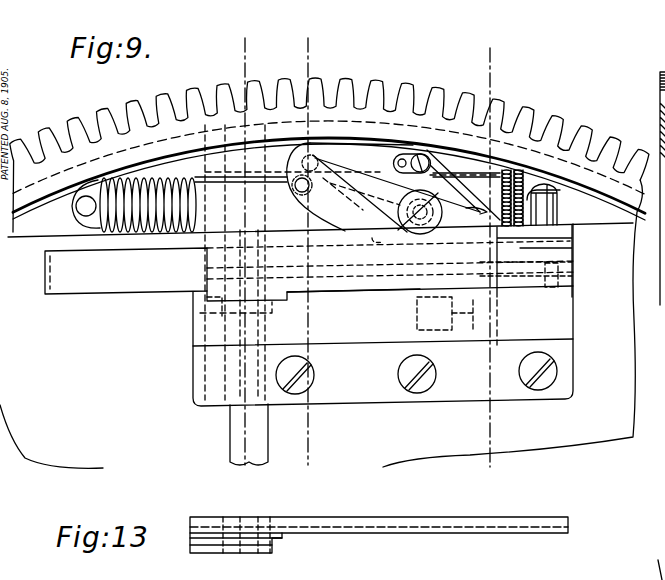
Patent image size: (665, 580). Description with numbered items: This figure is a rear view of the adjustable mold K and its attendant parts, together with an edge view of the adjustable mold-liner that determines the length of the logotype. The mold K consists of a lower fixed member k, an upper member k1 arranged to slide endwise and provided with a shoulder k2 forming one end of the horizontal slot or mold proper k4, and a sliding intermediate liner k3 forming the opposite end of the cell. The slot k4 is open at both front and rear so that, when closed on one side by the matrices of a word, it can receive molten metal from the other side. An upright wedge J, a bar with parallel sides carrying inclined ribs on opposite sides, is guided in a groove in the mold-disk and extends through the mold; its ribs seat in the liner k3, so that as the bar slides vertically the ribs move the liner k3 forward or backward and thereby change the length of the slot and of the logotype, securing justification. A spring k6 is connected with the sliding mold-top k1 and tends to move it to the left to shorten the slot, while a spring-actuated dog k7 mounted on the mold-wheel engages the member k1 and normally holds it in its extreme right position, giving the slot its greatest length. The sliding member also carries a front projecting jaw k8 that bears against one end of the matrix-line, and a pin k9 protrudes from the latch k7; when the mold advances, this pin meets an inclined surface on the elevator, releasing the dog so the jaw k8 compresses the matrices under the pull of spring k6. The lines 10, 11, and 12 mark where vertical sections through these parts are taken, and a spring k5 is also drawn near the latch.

In FIG. 9, the mold K is at (575, 313).
In FIG. 9, the lower fixed member k is at (380, 332).
In FIG. 13, the lower fixed member k is at (369, 523).
In FIG. 9, the upper member k1 is at (372, 238).
In FIG. 9, the shoulder k2 is at (447, 303).
In FIG. 9, the sliding liner k3 is at (220, 297).
In FIG. 9, the mold-slot k4 is at (353, 293).
In FIG. 9, the spring k5 is at (517, 200).
In FIG. 9, the spring k6 is at (138, 232).
In FIG. 13, the spring k6 is at (658, 575).
In FIG. 9, the spring-actuated dog k7 is at (358, 190).
In FIG. 9, the jaw k8 is at (475, 298).
In FIG. 9, the pin k9 is at (315, 163).
In FIG. 9, the wedge J is at (243, 437).
In FIG. 9, the section line 10 is at (491, 248).
In FIG. 9, the section line 11 is at (245, 243).
In FIG. 9, the section line 12 is at (307, 243).